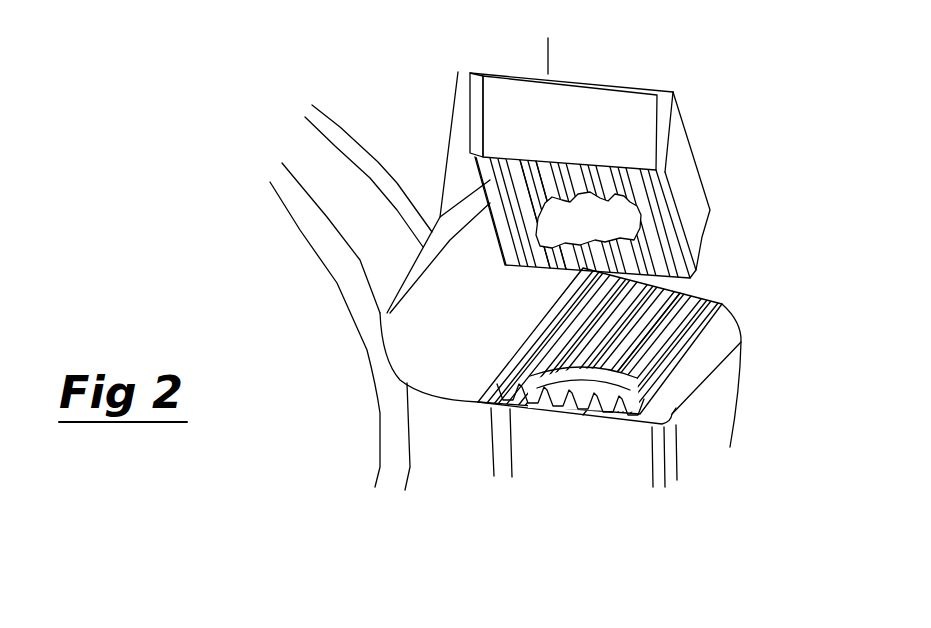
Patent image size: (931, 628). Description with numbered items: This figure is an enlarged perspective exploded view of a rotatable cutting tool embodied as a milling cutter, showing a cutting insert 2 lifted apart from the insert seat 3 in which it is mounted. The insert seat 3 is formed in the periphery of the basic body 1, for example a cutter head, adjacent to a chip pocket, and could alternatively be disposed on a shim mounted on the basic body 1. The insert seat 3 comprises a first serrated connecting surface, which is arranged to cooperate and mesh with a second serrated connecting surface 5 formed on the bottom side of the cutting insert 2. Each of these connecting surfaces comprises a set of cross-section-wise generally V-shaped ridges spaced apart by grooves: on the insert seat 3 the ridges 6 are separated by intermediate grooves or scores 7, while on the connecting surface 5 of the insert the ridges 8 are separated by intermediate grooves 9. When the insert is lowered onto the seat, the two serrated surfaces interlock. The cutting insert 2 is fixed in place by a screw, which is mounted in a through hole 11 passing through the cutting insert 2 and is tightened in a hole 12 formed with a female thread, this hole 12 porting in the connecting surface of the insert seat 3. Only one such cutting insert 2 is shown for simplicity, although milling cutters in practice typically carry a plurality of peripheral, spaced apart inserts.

The basic body 1 is at (380, 281).
The cutting insert 2 is at (640, 88).
The insert seat 3 is at (724, 304).
The second serrated connecting surface 5 is at (664, 216).
The ridges 6 is at (680, 348).
The grooves 7 is at (673, 375).
The ridges 8 is at (530, 160).
The grooves 9 is at (540, 160).
The through hole 11 is at (557, 217).
The hole 12 is at (588, 380).